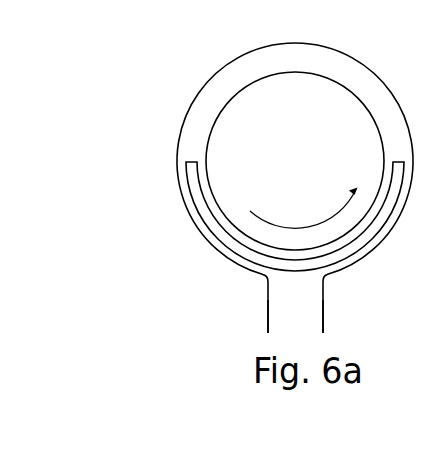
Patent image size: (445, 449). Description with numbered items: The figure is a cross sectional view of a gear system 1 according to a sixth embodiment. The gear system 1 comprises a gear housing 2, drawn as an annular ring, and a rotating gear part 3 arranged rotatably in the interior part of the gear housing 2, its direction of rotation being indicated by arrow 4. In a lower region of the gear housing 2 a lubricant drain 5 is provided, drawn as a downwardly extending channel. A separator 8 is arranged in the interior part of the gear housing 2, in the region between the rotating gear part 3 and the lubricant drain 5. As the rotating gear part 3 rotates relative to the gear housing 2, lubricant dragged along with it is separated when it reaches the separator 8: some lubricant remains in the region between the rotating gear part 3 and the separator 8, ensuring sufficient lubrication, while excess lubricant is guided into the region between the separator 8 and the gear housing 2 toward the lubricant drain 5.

The gear system 1 is at (128, 109).
The gear housing 2 is at (201, 92).
The rotating gear part 3 is at (348, 88).
The arrow 4 is at (275, 227).
The lubricant drain 5 is at (315, 299).
The separator 8 is at (195, 222).